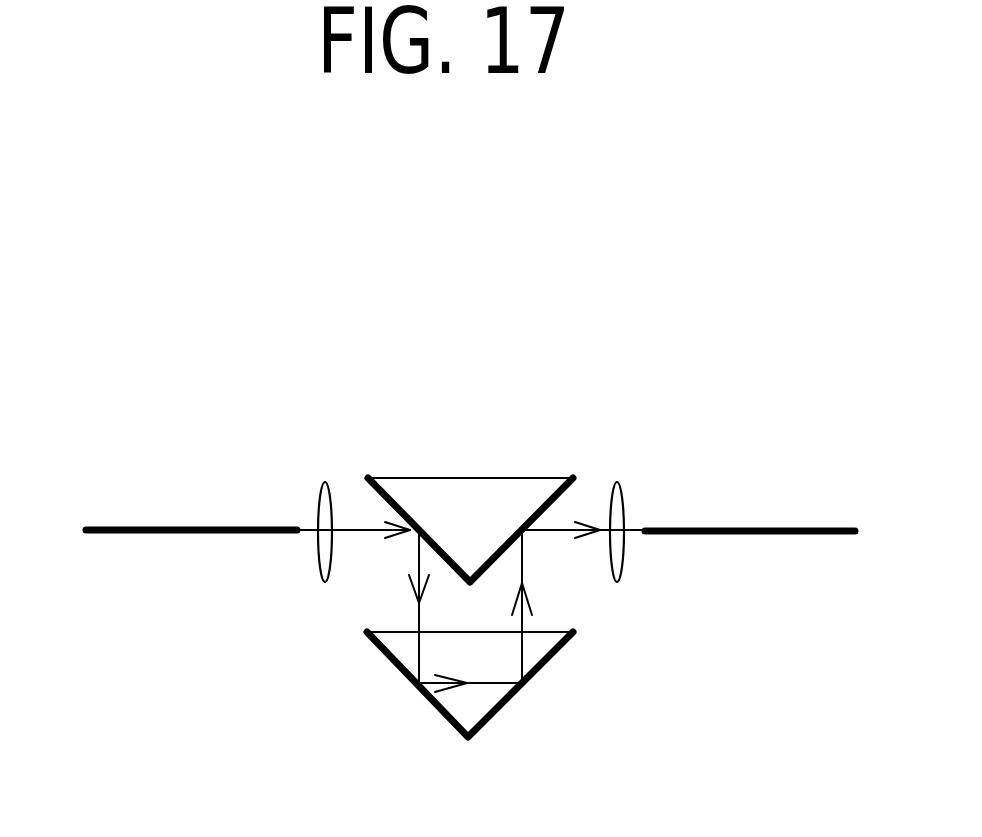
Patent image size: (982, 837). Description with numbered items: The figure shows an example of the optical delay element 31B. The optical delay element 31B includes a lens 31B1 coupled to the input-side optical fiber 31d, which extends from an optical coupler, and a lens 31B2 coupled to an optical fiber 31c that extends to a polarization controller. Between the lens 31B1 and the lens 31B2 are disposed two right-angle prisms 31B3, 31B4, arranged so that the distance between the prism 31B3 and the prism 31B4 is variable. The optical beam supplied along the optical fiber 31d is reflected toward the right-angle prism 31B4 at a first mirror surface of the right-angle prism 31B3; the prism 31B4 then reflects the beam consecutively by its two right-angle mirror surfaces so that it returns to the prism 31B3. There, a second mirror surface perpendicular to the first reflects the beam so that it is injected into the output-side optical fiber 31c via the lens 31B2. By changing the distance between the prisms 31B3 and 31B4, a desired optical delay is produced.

The optical delay element 31B is at (537, 268).
The lens 31B1 is at (323, 480).
The lens 31B2 is at (617, 480).
The right-angle prism 31B3 is at (466, 477).
The right-angle prism 31B4 is at (497, 717).
The input-side optical fiber 31d is at (190, 535).
The optical fiber 31c is at (750, 537).